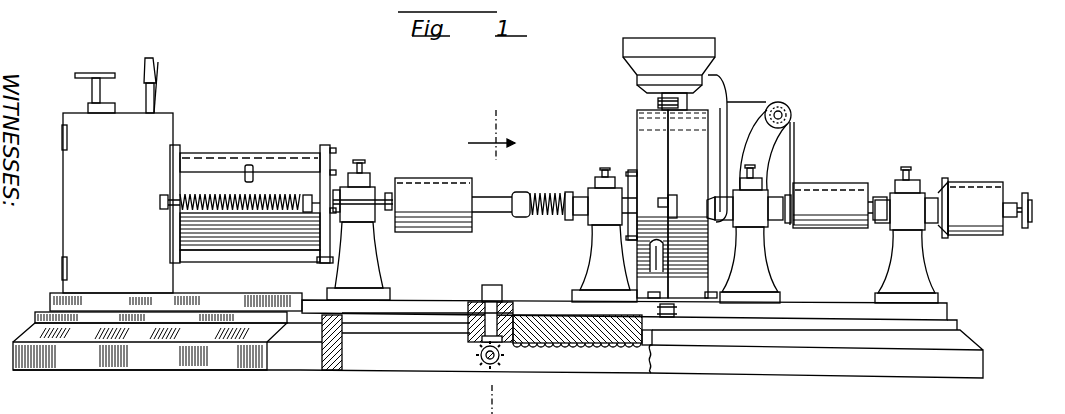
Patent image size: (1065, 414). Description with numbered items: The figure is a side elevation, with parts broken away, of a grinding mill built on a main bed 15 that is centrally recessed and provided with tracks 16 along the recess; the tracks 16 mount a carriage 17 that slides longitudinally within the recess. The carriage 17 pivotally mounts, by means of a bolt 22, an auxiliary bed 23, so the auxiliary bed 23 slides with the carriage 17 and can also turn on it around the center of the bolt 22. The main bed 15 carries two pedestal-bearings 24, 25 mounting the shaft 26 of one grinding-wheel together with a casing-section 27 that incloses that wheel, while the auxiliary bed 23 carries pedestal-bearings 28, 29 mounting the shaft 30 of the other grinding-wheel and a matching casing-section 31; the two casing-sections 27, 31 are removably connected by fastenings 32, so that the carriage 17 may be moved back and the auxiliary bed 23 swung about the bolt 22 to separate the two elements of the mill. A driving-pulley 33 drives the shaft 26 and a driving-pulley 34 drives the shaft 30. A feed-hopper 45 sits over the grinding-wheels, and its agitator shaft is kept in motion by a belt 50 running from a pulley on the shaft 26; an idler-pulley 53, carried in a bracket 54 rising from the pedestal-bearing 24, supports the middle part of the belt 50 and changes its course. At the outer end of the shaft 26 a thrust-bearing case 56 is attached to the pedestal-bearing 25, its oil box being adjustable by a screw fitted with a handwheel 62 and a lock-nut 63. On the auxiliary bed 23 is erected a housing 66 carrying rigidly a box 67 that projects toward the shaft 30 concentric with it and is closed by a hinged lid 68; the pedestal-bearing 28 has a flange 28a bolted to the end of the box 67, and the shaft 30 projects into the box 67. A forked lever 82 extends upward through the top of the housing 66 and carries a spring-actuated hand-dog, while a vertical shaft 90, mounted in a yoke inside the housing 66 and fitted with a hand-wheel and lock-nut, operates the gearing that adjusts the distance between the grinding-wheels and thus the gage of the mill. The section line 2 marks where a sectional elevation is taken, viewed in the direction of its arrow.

The section line 2 is at (491, 251).
The main bed 15 is at (498, 339).
The tracks 16 is at (412, 328).
The carriage 17 is at (560, 345).
The bolt 22 is at (487, 311).
The auxiliary bed 23 is at (289, 298).
The pedestal-bearing 24 is at (757, 265).
The pedestal-bearing 25 is at (913, 265).
The shaft 26 is at (721, 175).
The casing-section 27 is at (692, 204).
The pedestal-bearing 28 is at (360, 230).
The flange 28a is at (331, 148).
The pedestal-bearing 29 is at (604, 235).
The shaft 30 is at (535, 191).
The casing-section 31 is at (653, 204).
The fastenings 32 is at (673, 203).
The driving-pulley 33 is at (840, 205).
The driving-pulley 34 is at (453, 205).
The feed-hopper 45 is at (669, 72).
The belt 50 is at (796, 160).
The idler-pulley 53 is at (792, 117).
The bracket 54 is at (763, 150).
The case 56 is at (980, 208).
The handwheel 62 is at (1028, 199).
The lock-nut 63 is at (1026, 230).
The housing 66 is at (117, 203).
The box 67 is at (253, 228).
The hinged lid 68 is at (268, 165).
The forked lever 82 is at (157, 100).
The vertical shaft 90 is at (92, 94).